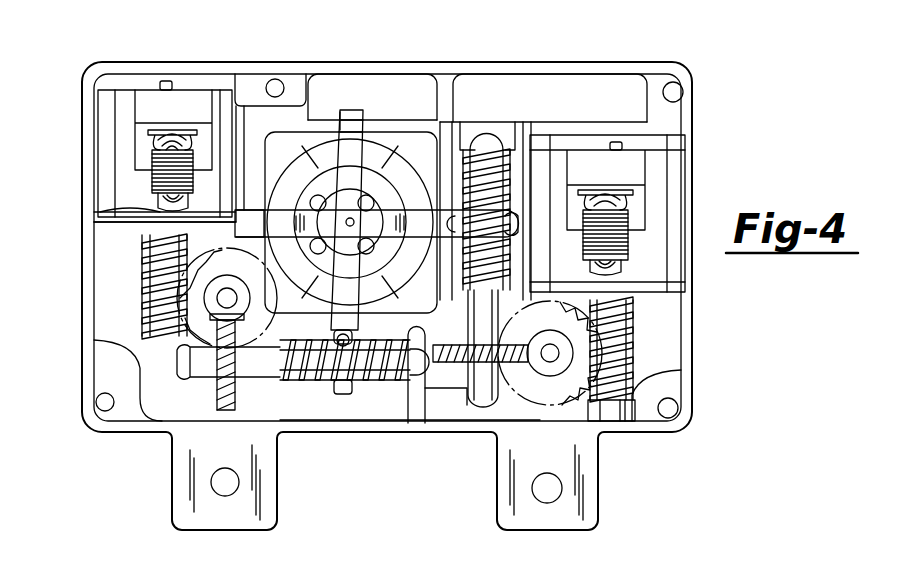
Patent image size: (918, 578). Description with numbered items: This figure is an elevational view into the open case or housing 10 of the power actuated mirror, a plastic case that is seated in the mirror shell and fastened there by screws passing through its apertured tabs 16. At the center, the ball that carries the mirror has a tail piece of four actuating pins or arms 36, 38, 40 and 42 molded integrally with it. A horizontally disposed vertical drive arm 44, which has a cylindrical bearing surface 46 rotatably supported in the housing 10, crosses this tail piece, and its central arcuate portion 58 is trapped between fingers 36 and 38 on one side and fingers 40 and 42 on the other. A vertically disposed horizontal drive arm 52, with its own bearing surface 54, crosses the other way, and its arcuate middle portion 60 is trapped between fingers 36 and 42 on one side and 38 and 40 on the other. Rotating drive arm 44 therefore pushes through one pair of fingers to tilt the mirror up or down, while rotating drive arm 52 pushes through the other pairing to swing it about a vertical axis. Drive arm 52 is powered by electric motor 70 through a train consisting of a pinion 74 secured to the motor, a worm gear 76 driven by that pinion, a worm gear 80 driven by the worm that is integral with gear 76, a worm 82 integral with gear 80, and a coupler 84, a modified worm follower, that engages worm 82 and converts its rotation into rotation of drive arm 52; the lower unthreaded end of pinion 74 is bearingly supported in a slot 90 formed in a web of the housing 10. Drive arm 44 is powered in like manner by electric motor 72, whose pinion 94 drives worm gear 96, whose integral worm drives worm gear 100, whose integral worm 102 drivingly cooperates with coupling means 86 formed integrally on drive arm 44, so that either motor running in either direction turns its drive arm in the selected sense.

The housing 10 is at (364, 72).
The apertured tabs 16 is at (262, 498).
The actuating arm 36 is at (410, 208).
The actuating arm 38 is at (318, 195).
The actuating arm 40 is at (314, 254).
The actuating arm 42 is at (372, 254).
The vertical drive arm 44 is at (418, 190).
The bearing surface 46 is at (253, 212).
The horizontal drive arm 52 is at (330, 122).
The bearing surface 54 is at (362, 108).
The arcuate portion 58 is at (377, 223).
The arcuate portion 60 is at (350, 282).
The electric motor 70 is at (160, 88).
The electric motor 72 is at (672, 140).
The pinion 74 is at (145, 278).
The worm gear 76 is at (190, 348).
The worm gear 80 is at (215, 412).
The worm 82 is at (386, 382).
The coupling means 84 is at (318, 393).
The coupling means 86 is at (457, 200).
The slot 90 is at (160, 218).
The pinion 94 is at (638, 338).
The worm gear 96 is at (540, 395).
The worm gear 100 is at (426, 395).
The worm 102 is at (484, 152).